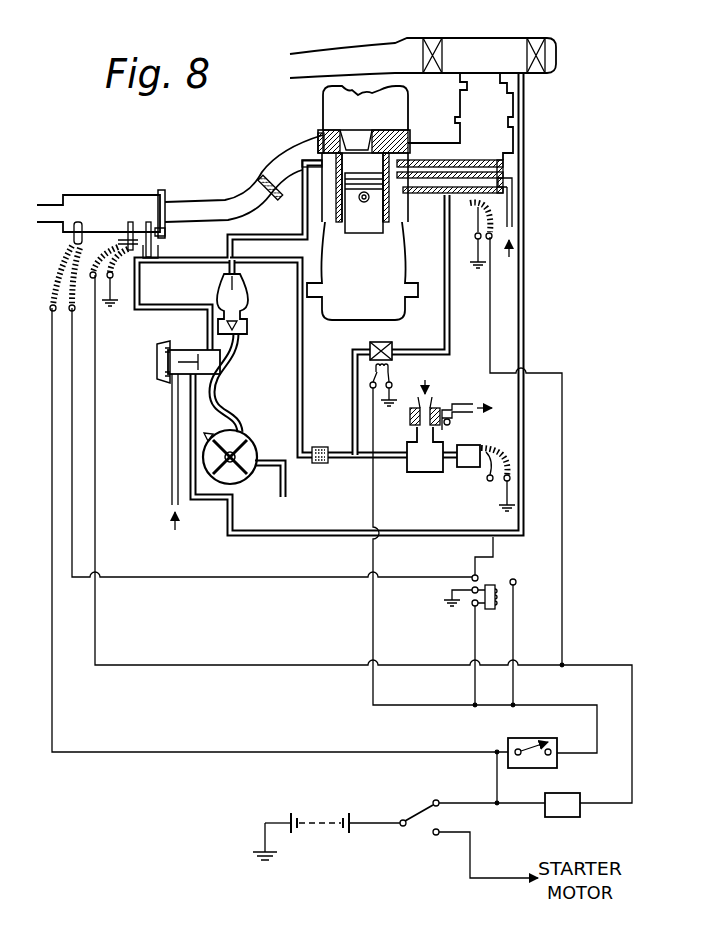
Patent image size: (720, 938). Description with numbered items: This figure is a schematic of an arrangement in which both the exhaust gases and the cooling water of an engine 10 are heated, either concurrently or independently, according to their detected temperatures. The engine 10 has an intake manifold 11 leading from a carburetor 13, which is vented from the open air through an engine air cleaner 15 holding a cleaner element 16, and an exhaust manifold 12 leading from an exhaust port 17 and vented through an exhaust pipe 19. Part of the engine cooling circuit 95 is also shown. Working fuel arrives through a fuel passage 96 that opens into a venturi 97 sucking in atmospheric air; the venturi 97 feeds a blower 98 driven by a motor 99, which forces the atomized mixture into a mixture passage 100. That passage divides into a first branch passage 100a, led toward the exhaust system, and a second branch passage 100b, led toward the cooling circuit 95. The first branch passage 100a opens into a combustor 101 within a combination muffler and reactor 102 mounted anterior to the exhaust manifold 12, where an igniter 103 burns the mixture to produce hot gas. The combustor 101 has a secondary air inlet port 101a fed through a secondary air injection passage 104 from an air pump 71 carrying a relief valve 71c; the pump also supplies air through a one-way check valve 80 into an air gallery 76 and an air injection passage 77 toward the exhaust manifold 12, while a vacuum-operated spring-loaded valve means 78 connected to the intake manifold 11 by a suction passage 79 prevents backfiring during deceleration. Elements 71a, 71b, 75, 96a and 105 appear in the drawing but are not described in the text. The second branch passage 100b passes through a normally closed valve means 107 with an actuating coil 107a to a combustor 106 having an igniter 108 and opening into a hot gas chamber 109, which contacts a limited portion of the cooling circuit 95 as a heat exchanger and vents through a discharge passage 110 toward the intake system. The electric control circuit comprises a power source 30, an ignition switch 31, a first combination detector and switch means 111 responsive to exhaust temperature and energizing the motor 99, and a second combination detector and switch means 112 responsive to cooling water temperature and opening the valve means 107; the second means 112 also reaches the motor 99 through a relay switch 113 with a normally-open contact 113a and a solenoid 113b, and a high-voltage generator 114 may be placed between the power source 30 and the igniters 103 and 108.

The engine 10 is at (353, 111).
The intake manifold 11 is at (431, 143).
The exhaust manifold 12 is at (295, 147).
The carburetor 13 is at (525, 117).
The engine air cleaner 15 is at (482, 37).
The cleaner element 16 is at (430, 37).
The exhaust port 17 is at (325, 133).
The exhaust pipe 19 is at (222, 200).
The power source 30 is at (320, 830).
The ignition switch 31 is at (420, 830).
The air pump 71 is at (258, 441).
The pump outlet 71a is at (262, 459).
The pump inlet 71b is at (244, 430).
The relief valve 71c is at (203, 446).
The pipe 75 is at (222, 393).
The air gallery 76 is at (248, 286).
The air injection passage 77 is at (280, 237).
The vacuum-operated spring-loaded valve means 78 is at (161, 360).
The suction passage 79 is at (171, 490).
The one-way check valve 80 is at (241, 347).
The engine cooling circuit 95 is at (512, 159).
The fuel passage 96 is at (460, 404).
The nozzle orifice 96a is at (452, 423).
The venturi 97 is at (410, 416).
The blower 98 is at (425, 472).
The motor 99 is at (469, 469).
The mixture passage 100 is at (393, 462).
The first branch passage 100a is at (348, 465).
The second branch passage 100b is at (355, 420).
The combustor 101 is at (158, 244).
The secondary air inlet port 101a is at (163, 233).
The combination muffler and reactor 102 is at (131, 194).
The igniter 103 is at (122, 232).
The secondary air injection passage 104 is at (150, 313).
The orifice 105 is at (320, 465).
The combustor 106 is at (445, 222).
The normally closed valve means 107 is at (371, 345).
The actuating coil 107a is at (377, 369).
The igniter 108 is at (464, 240).
The hot gas chamber 109 is at (503, 192).
The discharge passage 110 is at (514, 222).
The first combination detector and switch means 111 is at (73, 242).
The second combination detector and switch means 112 is at (509, 738).
The relay switch 113 is at (499, 566).
The normally-open contact 113a is at (513, 580).
The solenoid 113b is at (496, 606).
The high-voltage generator 114 is at (570, 818).